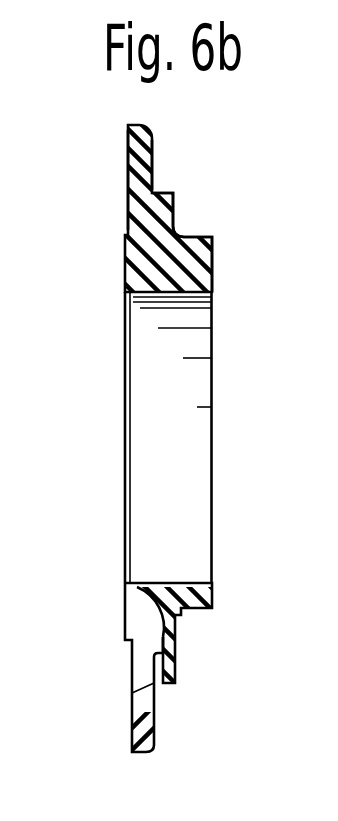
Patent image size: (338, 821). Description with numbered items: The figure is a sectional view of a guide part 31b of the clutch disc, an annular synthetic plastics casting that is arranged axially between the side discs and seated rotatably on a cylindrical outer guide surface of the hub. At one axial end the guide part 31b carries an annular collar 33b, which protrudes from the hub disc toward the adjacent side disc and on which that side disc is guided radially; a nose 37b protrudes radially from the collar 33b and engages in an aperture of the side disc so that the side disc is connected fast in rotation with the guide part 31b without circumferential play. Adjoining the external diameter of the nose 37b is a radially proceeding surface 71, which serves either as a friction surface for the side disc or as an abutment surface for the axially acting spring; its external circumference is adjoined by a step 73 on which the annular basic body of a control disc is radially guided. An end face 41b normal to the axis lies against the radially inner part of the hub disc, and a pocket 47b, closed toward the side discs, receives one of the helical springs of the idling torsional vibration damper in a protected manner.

The guide part 31b is at (119, 472).
The annular collar 33b is at (203, 612).
The nose 37b is at (199, 240).
The end face 41b is at (121, 266).
The pocket 47b is at (134, 618).
The radially proceeding surface 71 is at (176, 215).
The step 73 is at (158, 192).